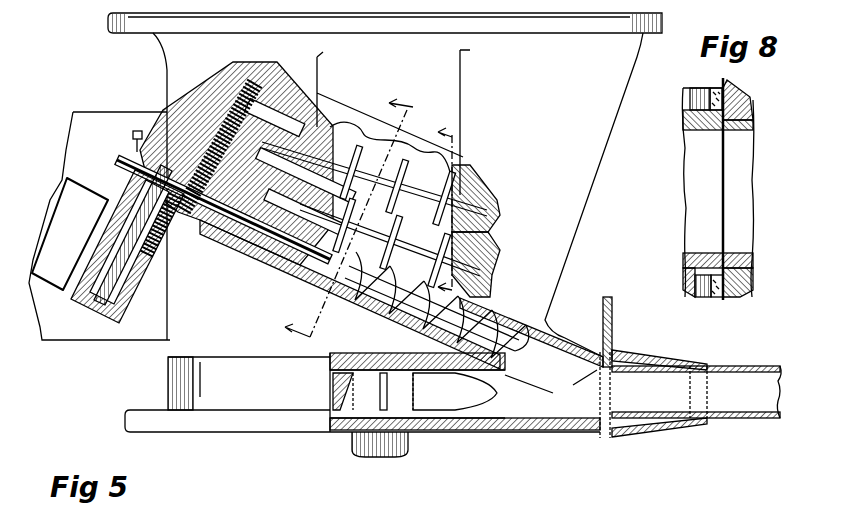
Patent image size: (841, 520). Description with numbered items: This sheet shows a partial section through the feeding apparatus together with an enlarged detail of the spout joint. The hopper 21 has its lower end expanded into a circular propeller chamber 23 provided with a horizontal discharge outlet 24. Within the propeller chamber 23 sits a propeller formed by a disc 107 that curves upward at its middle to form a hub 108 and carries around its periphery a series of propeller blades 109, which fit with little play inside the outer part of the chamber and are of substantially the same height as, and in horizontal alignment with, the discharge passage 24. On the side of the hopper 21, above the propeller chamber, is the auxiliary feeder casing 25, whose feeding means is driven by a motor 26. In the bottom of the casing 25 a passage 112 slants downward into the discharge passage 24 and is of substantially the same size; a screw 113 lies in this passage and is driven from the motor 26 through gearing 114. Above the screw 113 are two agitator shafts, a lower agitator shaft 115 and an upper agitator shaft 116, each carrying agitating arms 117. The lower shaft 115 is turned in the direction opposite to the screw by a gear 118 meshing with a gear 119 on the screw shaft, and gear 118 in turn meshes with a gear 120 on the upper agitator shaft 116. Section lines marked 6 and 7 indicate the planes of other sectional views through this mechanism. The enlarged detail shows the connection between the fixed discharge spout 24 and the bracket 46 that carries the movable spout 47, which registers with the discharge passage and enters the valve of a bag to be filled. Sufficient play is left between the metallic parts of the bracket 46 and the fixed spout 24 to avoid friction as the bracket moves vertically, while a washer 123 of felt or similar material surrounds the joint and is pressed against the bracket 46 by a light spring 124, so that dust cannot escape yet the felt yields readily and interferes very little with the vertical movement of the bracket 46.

In FIG. 5, the hopper 21 is at (581, 200).
In FIG. 5, the propeller chamber 23 is at (192, 362).
In FIG. 5, the discharge outlet 24 is at (563, 410).
In FIG. 5, the casing 25 is at (440, 160).
In FIG. 5, the motor 26 is at (77, 183).
In FIG. 5, the bracket 46 is at (608, 315).
In FIG. 8, the bracket 46 is at (740, 294).
In FIG. 5, the spout 47 is at (750, 418).
In FIG. 8, the spout 47 is at (750, 262).
In FIG. 5, the disc 107 is at (450, 415).
In FIG. 5, the hub 108 is at (422, 378).
In FIG. 5, the propeller blades 109 is at (388, 383).
In FIG. 5, the passage 112 is at (503, 327).
In FIG. 5, the screw 113 is at (480, 303).
In FIG. 5, the gearing 114 is at (147, 227).
In FIG. 5, the lower agitator shaft 115 is at (483, 268).
In FIG. 5, the upper agitator shaft 116 is at (490, 222).
In FIG. 5, the agitating arms 117 is at (447, 183).
In FIG. 5, the gear 118 is at (215, 120).
In FIG. 5, the gear 119 is at (188, 240).
In FIG. 5, the gear 120 is at (238, 79).
In FIG. 8, the washer 123 is at (712, 88).
In FIG. 8, the spring 124 is at (695, 90).
In FIG. 5, the section line 6- 6 is at (352, 225).
In FIG. 5, the section line 7- 7 is at (449, 216).